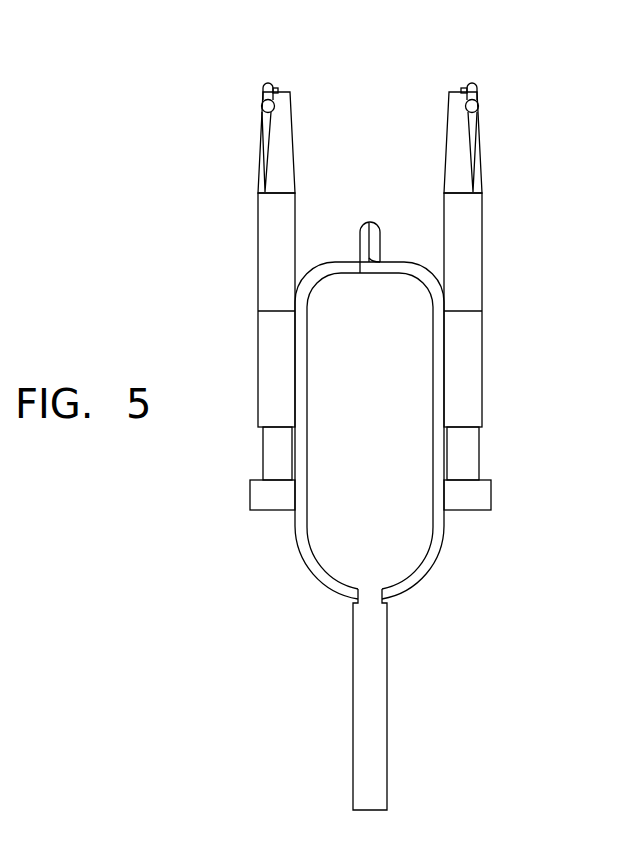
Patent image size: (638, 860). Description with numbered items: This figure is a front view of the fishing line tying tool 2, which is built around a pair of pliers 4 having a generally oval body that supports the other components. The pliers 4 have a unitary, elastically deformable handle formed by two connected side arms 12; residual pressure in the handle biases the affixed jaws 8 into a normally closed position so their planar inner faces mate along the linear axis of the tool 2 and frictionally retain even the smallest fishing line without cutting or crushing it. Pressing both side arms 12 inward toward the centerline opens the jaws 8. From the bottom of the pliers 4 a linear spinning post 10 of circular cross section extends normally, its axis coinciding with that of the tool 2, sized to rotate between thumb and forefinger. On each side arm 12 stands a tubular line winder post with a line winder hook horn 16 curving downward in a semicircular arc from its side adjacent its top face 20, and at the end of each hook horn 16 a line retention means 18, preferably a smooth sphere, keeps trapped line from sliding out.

The tool 2 is at (500, 607).
The pliers 4 is at (333, 273).
The jaws 8 is at (380, 242).
The spinning post 10 is at (387, 758).
The side arms 12 is at (312, 567).
The line winder hook horn 16 is at (267, 82).
The line retention means 18 is at (478, 111).
The top face 20 is at (449, 91).